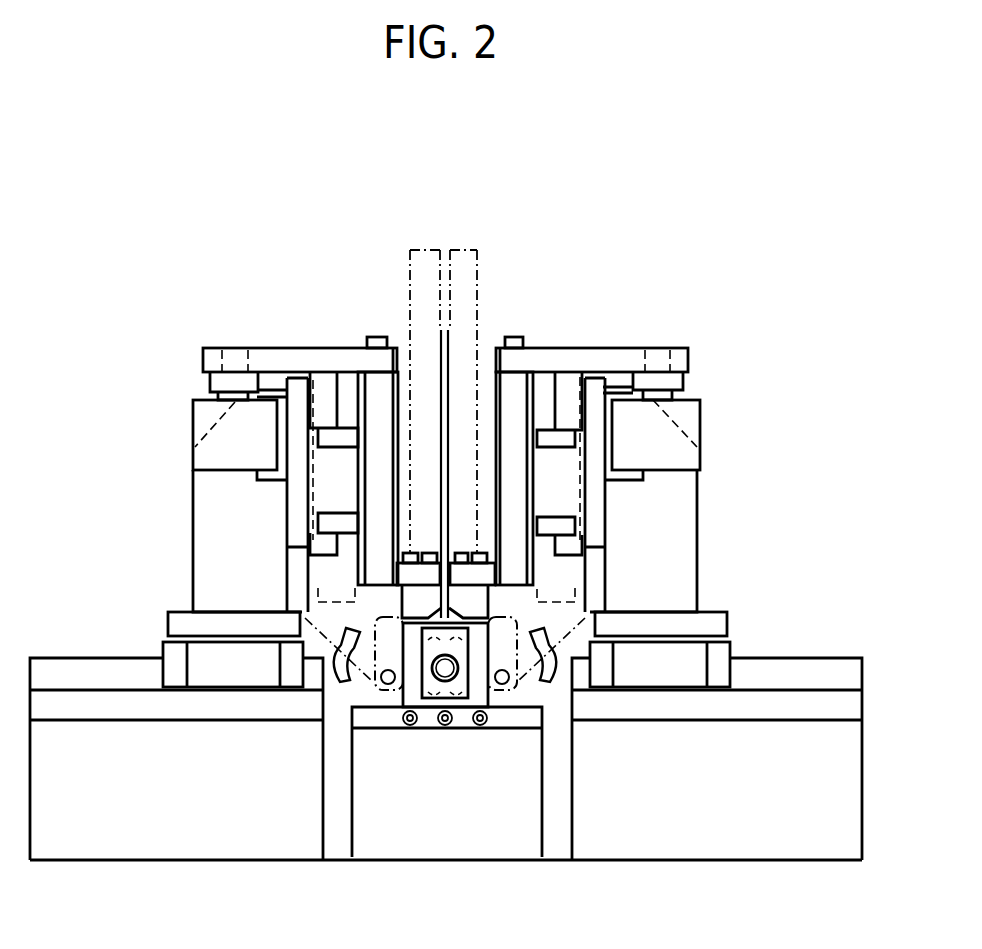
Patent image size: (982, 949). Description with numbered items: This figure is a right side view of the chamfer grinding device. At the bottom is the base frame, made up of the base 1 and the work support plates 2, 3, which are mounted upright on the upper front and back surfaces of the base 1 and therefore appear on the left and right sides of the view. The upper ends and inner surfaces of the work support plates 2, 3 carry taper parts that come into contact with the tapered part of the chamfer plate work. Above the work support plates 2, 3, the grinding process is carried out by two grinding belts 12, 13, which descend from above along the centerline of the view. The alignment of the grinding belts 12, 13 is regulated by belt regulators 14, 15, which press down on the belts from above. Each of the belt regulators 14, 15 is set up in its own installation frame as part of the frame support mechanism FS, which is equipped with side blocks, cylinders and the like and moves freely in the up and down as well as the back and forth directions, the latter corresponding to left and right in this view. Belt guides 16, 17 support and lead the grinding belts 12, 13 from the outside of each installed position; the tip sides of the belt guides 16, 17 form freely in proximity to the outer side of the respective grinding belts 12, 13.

The base 1 is at (445, 823).
The work support plate 2 is at (402, 705).
The work support plate 3 is at (492, 707).
The grinding belt 12 is at (410, 250).
The grinding belt 13 is at (467, 250).
The belt regulator 14 is at (410, 592).
The belt regulator 15 is at (493, 587).
The belt guide 16 is at (372, 622).
The belt guide 17 is at (545, 628).
The frame support mechanism FS is at (539, 345).